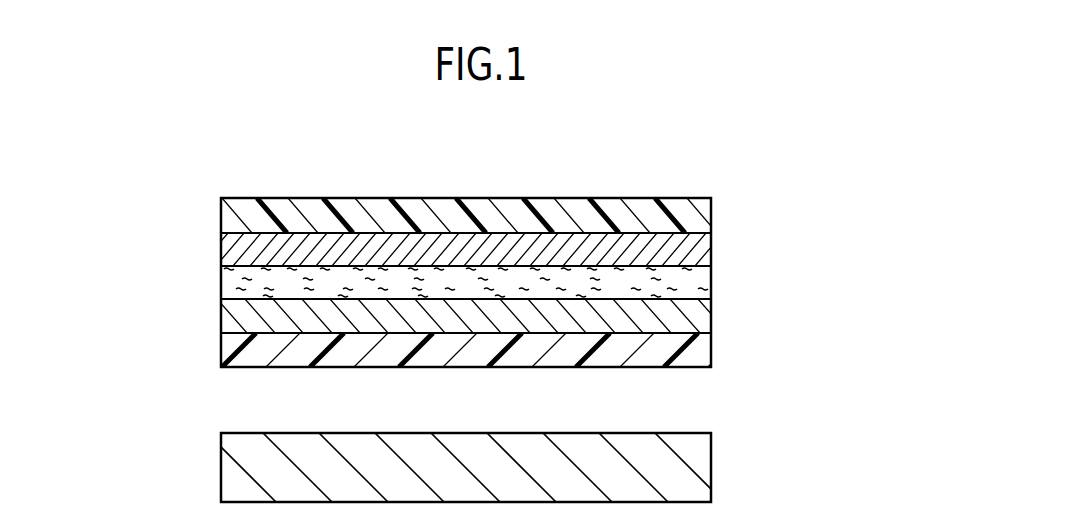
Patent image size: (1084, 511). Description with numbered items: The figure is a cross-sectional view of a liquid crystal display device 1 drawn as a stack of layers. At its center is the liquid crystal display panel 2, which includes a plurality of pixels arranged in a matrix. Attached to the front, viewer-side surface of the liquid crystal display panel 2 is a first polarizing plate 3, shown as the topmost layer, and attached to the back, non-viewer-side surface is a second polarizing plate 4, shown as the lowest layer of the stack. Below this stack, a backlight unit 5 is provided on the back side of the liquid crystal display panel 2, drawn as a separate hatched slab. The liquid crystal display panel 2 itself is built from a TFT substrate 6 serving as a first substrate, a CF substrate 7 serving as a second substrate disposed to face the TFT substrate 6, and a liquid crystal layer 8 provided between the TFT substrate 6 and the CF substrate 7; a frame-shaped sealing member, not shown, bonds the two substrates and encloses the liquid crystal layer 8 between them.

The liquid crystal display device 1 is at (690, 160).
The liquid crystal display panel 2 is at (150, 225).
The first polarizing plate 3 is at (697, 216).
The second polarizing plate 4 is at (697, 349).
The backlight unit 5 is at (695, 462).
The TFT substrate 6 is at (228, 317).
The CF substrate 7 is at (228, 246).
The liquid crystal layer 8 is at (228, 279).